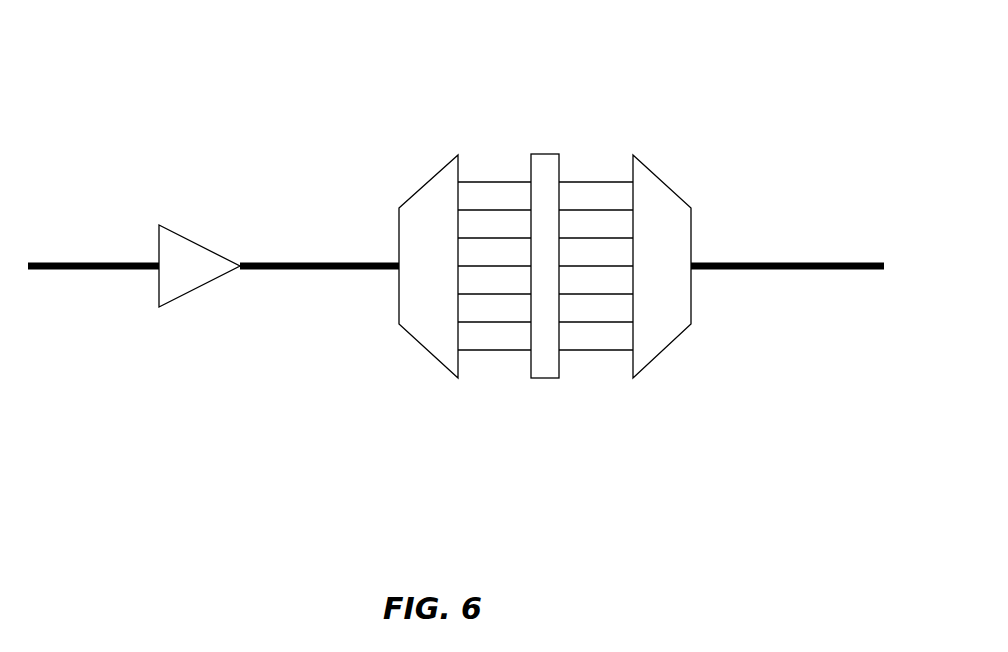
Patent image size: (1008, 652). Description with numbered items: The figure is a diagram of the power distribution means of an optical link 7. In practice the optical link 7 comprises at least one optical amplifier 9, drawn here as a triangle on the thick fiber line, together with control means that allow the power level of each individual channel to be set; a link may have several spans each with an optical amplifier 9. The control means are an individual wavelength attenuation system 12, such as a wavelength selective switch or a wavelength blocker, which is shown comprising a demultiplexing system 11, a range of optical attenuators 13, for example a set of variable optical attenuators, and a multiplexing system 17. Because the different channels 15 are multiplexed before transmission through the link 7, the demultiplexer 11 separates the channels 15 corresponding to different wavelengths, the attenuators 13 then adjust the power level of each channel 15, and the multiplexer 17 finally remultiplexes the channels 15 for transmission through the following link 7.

The optical link 7 is at (884, 472).
The optical amplifier 9 is at (187, 260).
The demultiplexing system 11 is at (437, 205).
The individual wavelength attenuation system 12 is at (708, 70).
The optical attenuators 13 is at (542, 172).
The channels 15 is at (494, 324).
The multiplexing system 17 is at (658, 203).